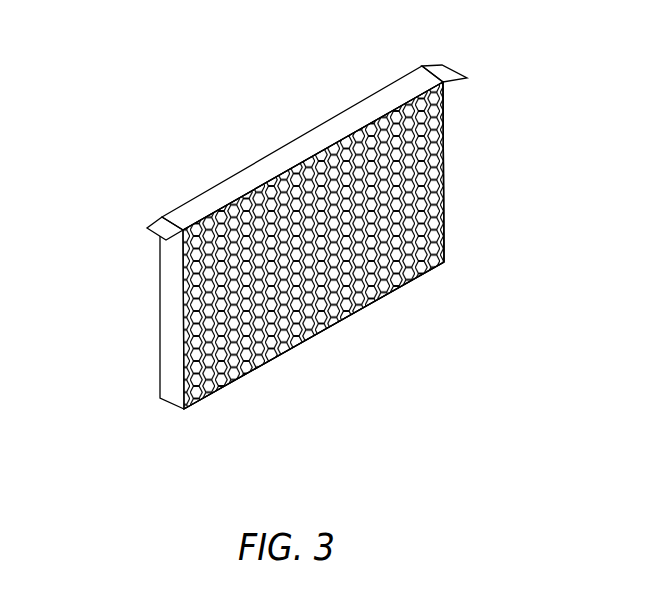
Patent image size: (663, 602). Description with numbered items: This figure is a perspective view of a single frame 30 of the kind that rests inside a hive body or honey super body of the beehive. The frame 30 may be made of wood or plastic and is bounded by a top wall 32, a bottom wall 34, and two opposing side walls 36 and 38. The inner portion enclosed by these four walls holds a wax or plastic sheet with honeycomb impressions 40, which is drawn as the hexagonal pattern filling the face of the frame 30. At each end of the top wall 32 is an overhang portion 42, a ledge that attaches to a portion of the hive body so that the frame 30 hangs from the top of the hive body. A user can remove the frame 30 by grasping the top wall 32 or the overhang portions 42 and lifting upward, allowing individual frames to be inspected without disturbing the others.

The frame 30 is at (182, 141).
The top wall 32 is at (313, 147).
The bottom wall 34 is at (300, 345).
The side wall 36 is at (168, 275).
The side wall 38 is at (447, 173).
The sheets with honeycomb impressions 40 is at (367, 288).
The overhang portions 42 is at (445, 78).